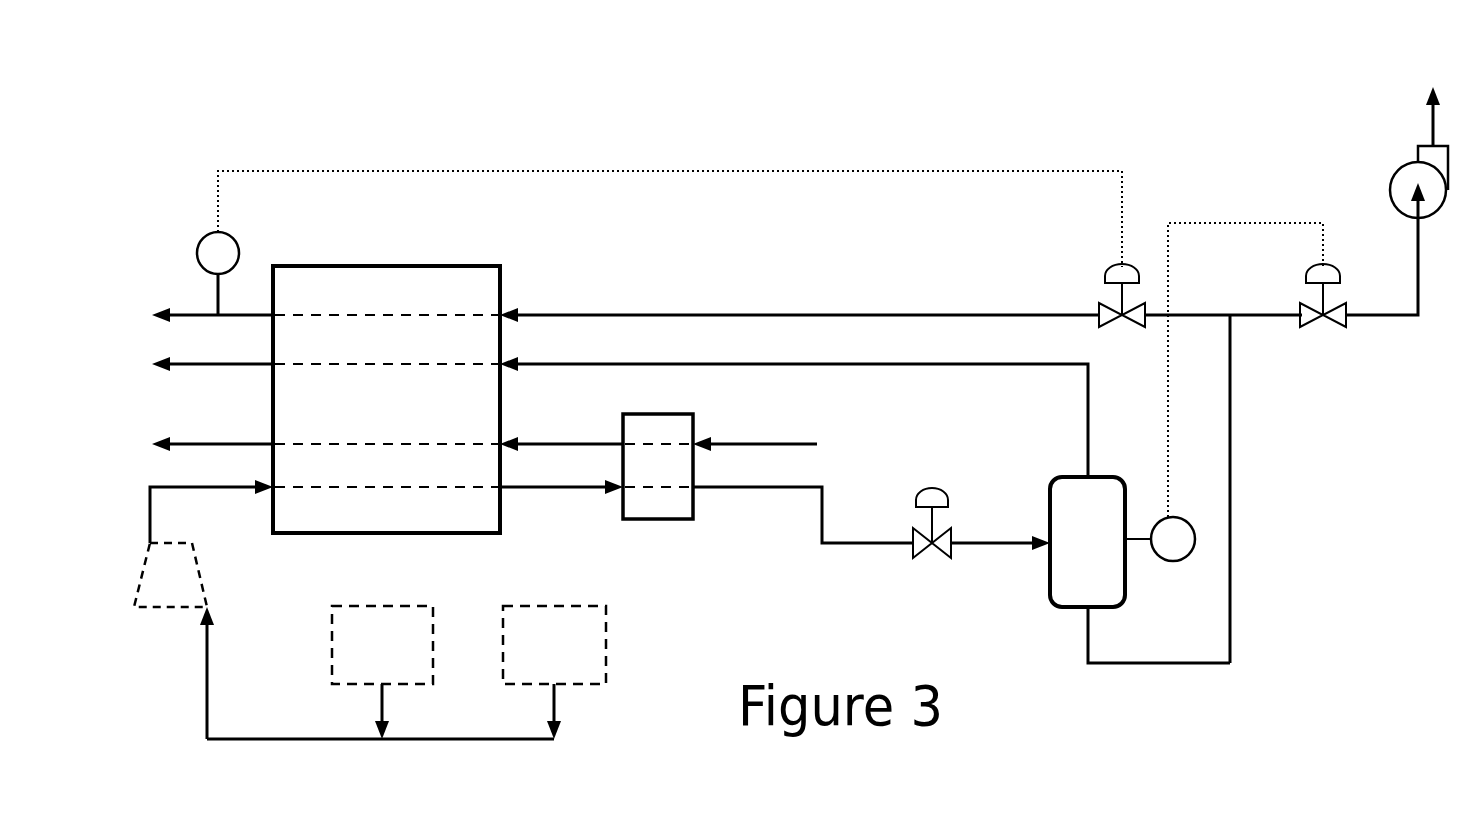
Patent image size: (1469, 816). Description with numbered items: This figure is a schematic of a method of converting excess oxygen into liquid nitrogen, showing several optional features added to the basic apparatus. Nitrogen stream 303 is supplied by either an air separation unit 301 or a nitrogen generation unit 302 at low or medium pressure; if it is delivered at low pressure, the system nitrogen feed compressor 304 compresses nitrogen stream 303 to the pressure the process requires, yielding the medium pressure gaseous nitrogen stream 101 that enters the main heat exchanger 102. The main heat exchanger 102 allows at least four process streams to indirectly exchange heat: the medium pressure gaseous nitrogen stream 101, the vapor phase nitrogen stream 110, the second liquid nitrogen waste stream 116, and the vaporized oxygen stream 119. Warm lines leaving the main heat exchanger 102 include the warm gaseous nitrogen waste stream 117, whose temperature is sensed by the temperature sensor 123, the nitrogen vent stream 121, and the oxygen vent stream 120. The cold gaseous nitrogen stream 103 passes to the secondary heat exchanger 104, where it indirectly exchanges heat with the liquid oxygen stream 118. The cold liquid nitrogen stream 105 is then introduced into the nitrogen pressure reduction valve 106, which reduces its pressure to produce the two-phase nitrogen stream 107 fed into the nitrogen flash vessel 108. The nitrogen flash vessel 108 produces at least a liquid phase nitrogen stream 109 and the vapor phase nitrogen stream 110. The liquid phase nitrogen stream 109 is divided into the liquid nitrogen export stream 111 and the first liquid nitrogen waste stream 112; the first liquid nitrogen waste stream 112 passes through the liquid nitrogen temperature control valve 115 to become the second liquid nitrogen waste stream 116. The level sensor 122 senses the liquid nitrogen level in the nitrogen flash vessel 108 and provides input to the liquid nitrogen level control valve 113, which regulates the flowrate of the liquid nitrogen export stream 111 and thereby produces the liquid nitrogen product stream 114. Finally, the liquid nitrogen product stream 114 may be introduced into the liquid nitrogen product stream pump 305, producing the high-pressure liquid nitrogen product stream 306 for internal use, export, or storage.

The medium pressure gaseous nitrogen stream 101 is at (211, 511).
The main heat exchanger 102 is at (386, 382).
The cold gaseous nitrogen stream 103 is at (561, 501).
The secondary heat exchanger 104 is at (658, 486).
The cold liquid nitrogen stream 105 is at (803, 515).
The nitrogen pressure reduction valve 106 is at (930, 541).
The two-phase nitrogen stream 107 is at (1000, 528).
The nitrogen flash vessel 108 is at (1087, 542).
The liquid phase nitrogen stream 109 is at (1190, 635).
The vapor phase nitrogen stream 110 is at (794, 417).
The liquid nitrogen export stream 111 is at (1258, 489).
The first liquid nitrogen waste stream 112 is at (1245, 370).
The liquid nitrogen level control valve 113 is at (1323, 312).
The liquid nitrogen product stream 114 is at (1407, 257).
The liquid nitrogen temperature control valve 115 is at (1122, 312).
The second liquid nitrogen waste stream 116 is at (901, 300).
The warm gaseous nitrogen waste stream 117 is at (185, 315).
The liquid oxygen stream 118 is at (780, 444).
The vaporized oxygen stream 119 is at (561, 430).
The oxygen vent stream 120 is at (185, 444).
The nitrogen vent stream 121 is at (185, 364).
The level sensor 122 is at (1160, 556).
The temperature sensor 123 is at (631, 243).
The air separation unit 301 is at (382, 672).
The nitrogen generation unit 302 is at (554, 672).
The nitrogen stream 303 is at (377, 673).
The system nitrogen feed compressor 304 is at (170, 575).
The liquid nitrogen product stream pump 305 is at (1390, 182).
The high-pressure liquid nitrogen product stream 306 is at (1433, 100).